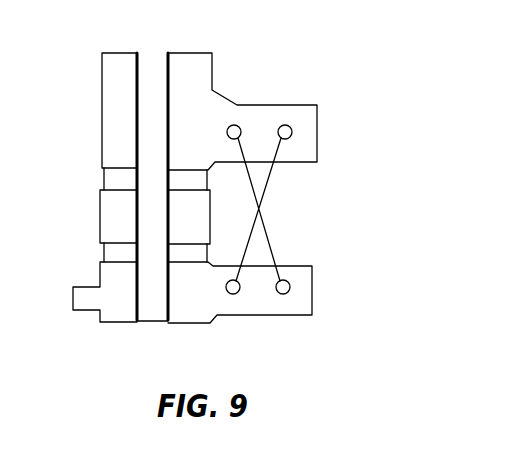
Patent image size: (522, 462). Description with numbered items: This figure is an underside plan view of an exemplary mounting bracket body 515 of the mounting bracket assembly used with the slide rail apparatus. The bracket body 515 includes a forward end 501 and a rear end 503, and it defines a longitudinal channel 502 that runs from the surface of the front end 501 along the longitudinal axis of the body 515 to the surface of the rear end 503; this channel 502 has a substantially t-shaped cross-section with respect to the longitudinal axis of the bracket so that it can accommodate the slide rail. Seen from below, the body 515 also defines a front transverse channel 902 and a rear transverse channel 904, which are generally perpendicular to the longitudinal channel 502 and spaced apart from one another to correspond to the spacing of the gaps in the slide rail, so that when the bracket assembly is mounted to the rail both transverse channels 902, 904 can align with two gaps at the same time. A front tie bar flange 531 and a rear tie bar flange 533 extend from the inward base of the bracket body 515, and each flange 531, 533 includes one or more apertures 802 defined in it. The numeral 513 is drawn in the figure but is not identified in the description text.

The housing 513 is at (8, 44).
The channel 502 is at (148, 75).
The rear end 503 is at (125, 57).
The mounting bracket body 515 is at (108, 152).
The rear transverse channel 904 is at (112, 183).
The front transverse channel 902 is at (112, 256).
The forward end 501 is at (113, 322).
The rear tie bar flange 533 is at (268, 113).
The front tie bar flange 531 is at (292, 297).
The apertures 802 is at (262, 198).